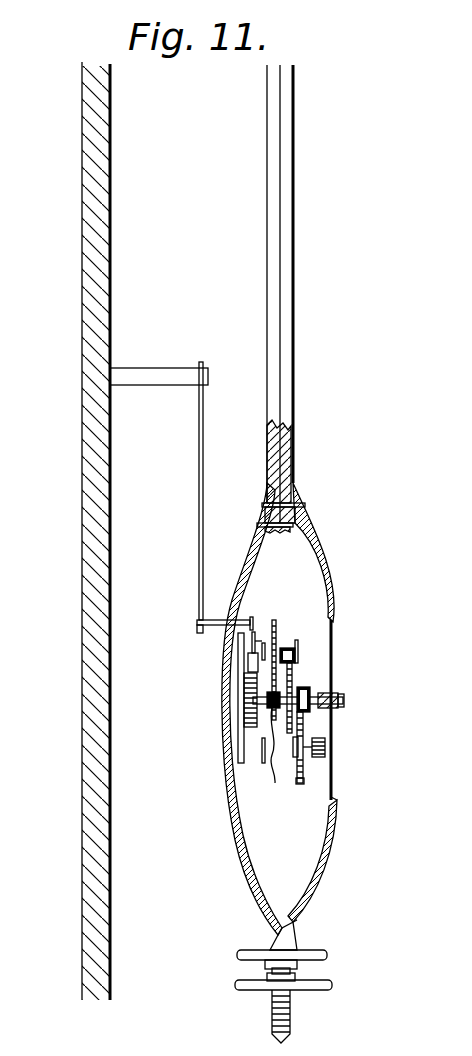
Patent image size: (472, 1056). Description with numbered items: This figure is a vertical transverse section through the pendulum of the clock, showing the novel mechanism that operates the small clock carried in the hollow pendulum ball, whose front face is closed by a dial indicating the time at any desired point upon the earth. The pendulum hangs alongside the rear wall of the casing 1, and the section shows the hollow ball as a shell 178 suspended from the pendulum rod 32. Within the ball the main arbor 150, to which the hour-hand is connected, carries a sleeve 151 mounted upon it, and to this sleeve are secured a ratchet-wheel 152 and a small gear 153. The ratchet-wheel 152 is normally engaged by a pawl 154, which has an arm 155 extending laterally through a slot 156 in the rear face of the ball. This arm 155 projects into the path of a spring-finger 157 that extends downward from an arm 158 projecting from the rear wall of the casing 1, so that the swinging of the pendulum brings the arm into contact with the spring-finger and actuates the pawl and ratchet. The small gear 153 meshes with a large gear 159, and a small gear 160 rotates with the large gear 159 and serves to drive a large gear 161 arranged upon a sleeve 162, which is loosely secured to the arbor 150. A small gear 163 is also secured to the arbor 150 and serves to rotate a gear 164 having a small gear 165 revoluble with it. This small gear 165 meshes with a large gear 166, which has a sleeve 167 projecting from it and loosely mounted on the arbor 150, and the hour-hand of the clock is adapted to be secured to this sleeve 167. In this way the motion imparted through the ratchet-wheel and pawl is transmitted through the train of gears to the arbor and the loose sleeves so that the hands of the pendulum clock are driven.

The casing 1 is at (112, 197).
The tube 32 is at (283, 384).
The main arbor 150 is at (344, 697).
The sleeve 151 is at (246, 741).
The ratchet-wheel 152 is at (244, 720).
The small gear 153 is at (278, 752).
The pawl 154 is at (238, 662).
The arm 155 is at (215, 622).
The slot 156 is at (226, 637).
The spring-finger 157 is at (199, 463).
The arm 158 is at (151, 366).
The large gear 159 is at (283, 633).
The small gear 160 is at (273, 650).
The large gear 161 is at (330, 668).
The sleeve 162 is at (307, 682).
The small gear 163 is at (305, 700).
The gear 164 is at (304, 782).
The small gear 165 is at (326, 756).
The large gear 166 is at (331, 616).
The sleeve 167 is at (336, 712).
The housing 178 is at (325, 562).